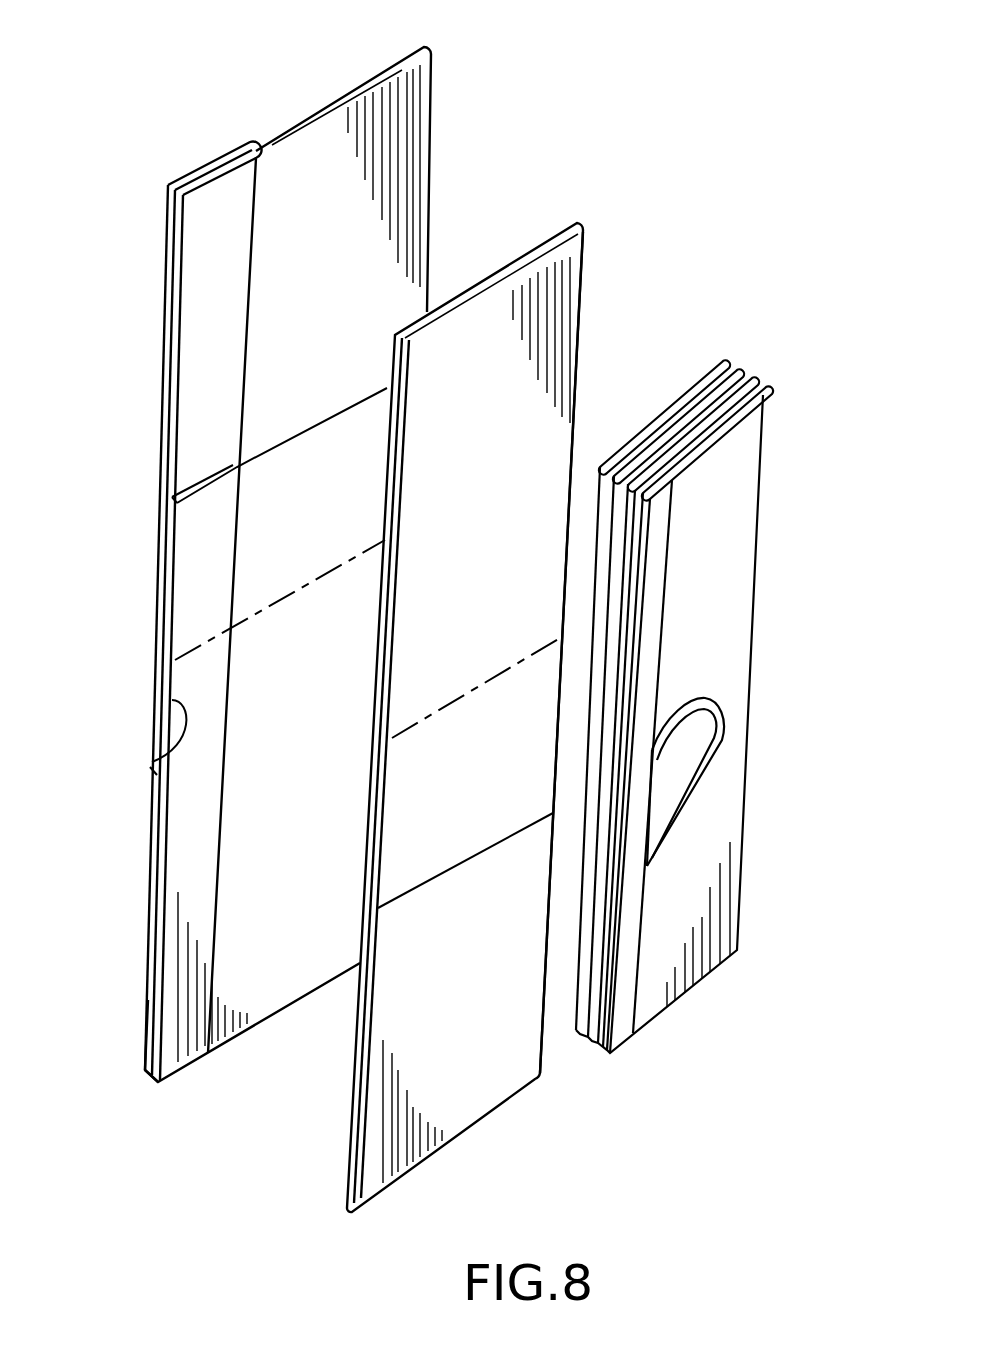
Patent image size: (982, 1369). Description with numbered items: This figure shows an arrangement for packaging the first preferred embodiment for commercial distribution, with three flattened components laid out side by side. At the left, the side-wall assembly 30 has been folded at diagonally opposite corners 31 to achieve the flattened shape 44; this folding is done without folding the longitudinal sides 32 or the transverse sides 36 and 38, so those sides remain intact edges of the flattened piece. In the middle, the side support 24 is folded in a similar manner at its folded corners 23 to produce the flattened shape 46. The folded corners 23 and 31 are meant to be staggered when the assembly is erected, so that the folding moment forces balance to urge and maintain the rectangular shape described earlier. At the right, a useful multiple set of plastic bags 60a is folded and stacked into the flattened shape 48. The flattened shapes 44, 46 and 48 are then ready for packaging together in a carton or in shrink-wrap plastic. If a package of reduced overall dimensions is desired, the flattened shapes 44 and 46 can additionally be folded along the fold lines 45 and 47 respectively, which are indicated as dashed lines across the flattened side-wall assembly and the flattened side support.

The side-wall assembly 30 is at (438, 67).
The flattened shape 44 is at (211, 117).
The transverse side 36 is at (180, 328).
The folded corner 31 is at (373, 72).
The longitudinal side 32 is at (160, 437).
The fold line 45 is at (198, 643).
The transverse side 38 is at (147, 920).
The flattened shape 46 is at (535, 196).
The folded corner 23 is at (543, 240).
The side support 24 is at (583, 335).
The fold line 47 is at (407, 732).
The flattened shape 48 is at (706, 340).
The plastic bags 60a is at (743, 372).